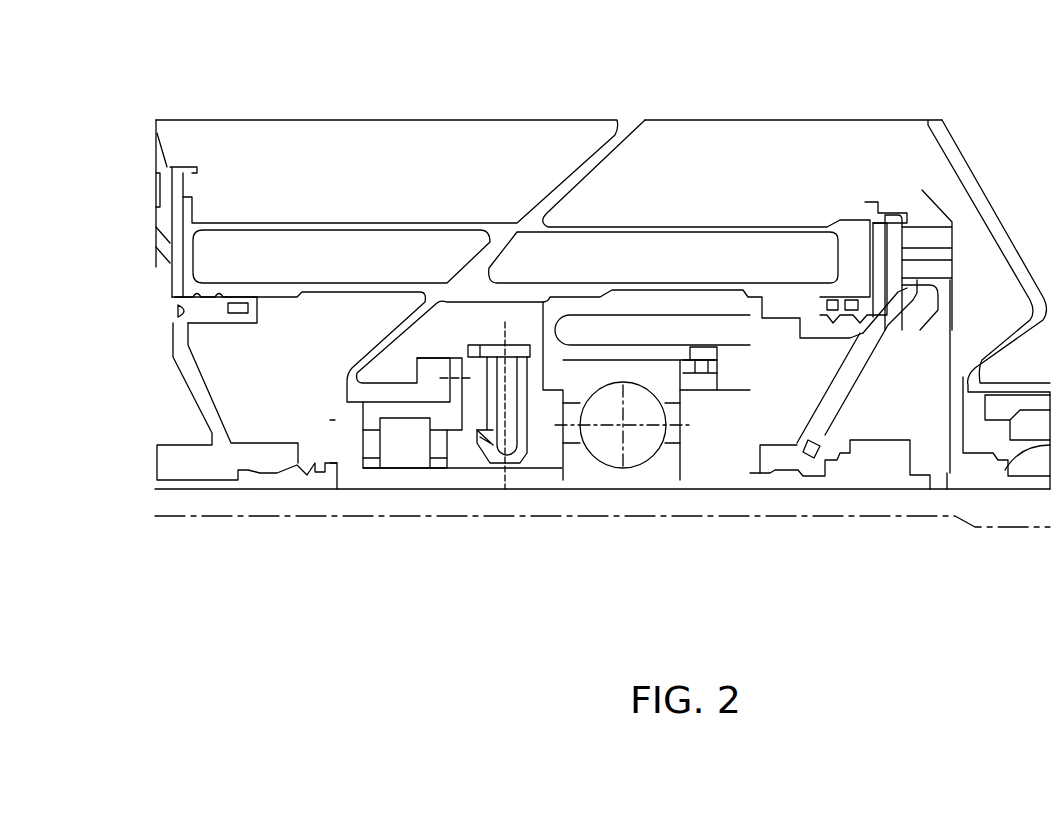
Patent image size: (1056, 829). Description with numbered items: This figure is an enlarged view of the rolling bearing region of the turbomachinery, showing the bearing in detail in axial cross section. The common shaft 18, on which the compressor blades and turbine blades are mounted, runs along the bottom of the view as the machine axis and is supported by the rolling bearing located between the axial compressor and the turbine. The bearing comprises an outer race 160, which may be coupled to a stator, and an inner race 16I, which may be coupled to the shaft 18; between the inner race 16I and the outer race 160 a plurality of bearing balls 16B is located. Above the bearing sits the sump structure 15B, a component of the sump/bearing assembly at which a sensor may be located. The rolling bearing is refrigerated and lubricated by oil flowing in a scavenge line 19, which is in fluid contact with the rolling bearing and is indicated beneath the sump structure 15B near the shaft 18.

The sump structure 15B is at (360, 297).
The outer race 160 is at (642, 385).
The inner race 16I is at (593, 460).
The bearing balls 16B is at (645, 442).
The shaft 18 is at (200, 510).
The scavenge line 19 is at (331, 420).